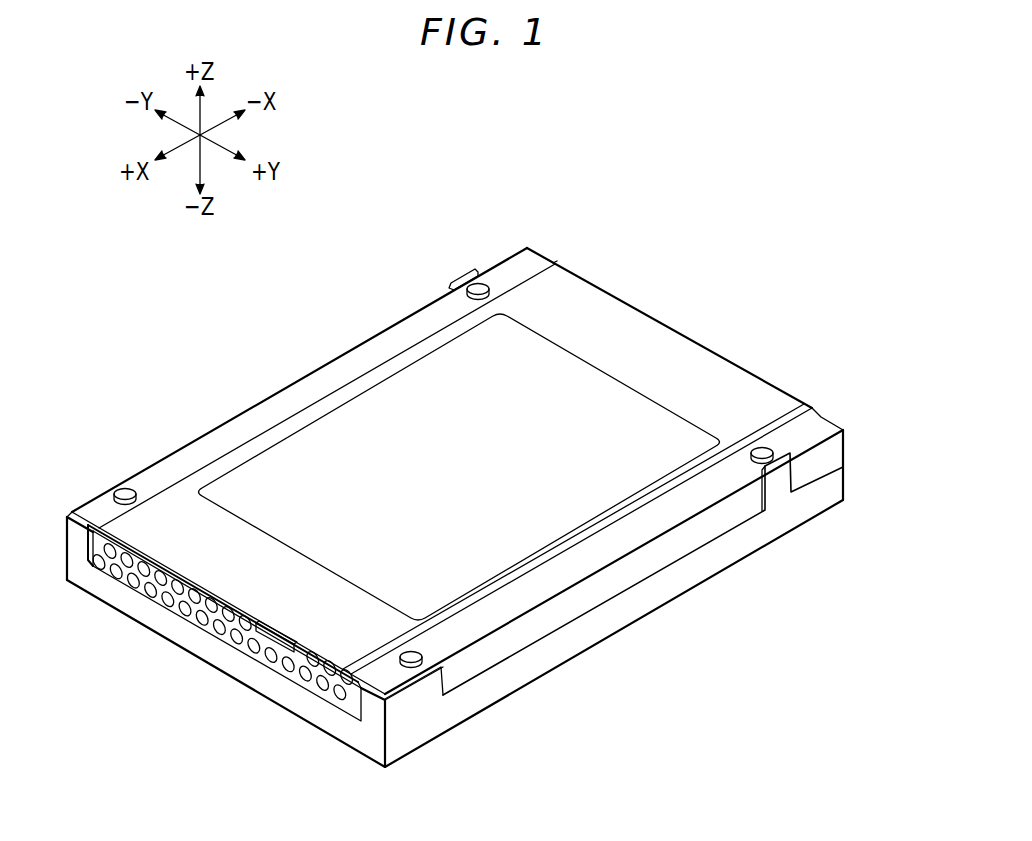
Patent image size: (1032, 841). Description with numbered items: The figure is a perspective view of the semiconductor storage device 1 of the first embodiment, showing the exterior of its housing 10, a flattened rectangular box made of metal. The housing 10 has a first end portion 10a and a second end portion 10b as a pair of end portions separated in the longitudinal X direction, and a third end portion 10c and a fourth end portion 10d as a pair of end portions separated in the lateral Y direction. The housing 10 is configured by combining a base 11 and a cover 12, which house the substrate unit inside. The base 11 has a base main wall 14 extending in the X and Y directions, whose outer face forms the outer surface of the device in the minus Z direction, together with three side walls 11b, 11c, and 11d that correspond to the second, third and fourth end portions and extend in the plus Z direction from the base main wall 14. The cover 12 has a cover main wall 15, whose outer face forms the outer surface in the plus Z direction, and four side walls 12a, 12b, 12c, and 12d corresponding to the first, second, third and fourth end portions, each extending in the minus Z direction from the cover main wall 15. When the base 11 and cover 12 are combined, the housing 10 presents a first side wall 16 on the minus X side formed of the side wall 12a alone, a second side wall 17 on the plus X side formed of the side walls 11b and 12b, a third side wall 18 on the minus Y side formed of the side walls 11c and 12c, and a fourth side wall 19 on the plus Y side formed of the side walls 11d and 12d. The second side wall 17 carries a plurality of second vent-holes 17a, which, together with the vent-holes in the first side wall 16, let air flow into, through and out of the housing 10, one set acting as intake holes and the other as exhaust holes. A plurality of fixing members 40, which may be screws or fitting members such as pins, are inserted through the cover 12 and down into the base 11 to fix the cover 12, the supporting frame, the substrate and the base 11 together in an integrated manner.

The semiconductor storage device 1 is at (652, 166).
The housing 10 is at (935, 577).
The first end portion 10a is at (692, 353).
The second end portion 10b is at (240, 590).
The third end portion 10c is at (345, 368).
The fourth end portion 10d is at (669, 520).
The base 11 is at (846, 490).
The side wall of the base 11b is at (330, 727).
The side wall of the base 11c is at (57, 540).
The side wall of the base 11d is at (600, 625).
The cover 12 is at (846, 452).
The side wall of the cover 12a is at (750, 372).
The side wall of the cover 12b is at (290, 655).
The side wall of the cover 12c is at (95, 497).
The side wall of the cover 12d is at (610, 555).
The base main wall 14 is at (487, 706).
The cover main wall 15 is at (437, 375).
The first side wall 16 is at (484, 449).
The second side wall 17 is at (205, 695).
The second vent-holes 17a is at (150, 595).
The third side wall 18 is at (140, 345).
The fourth side wall 19 is at (740, 635).
The fixing member 40 is at (478, 284).